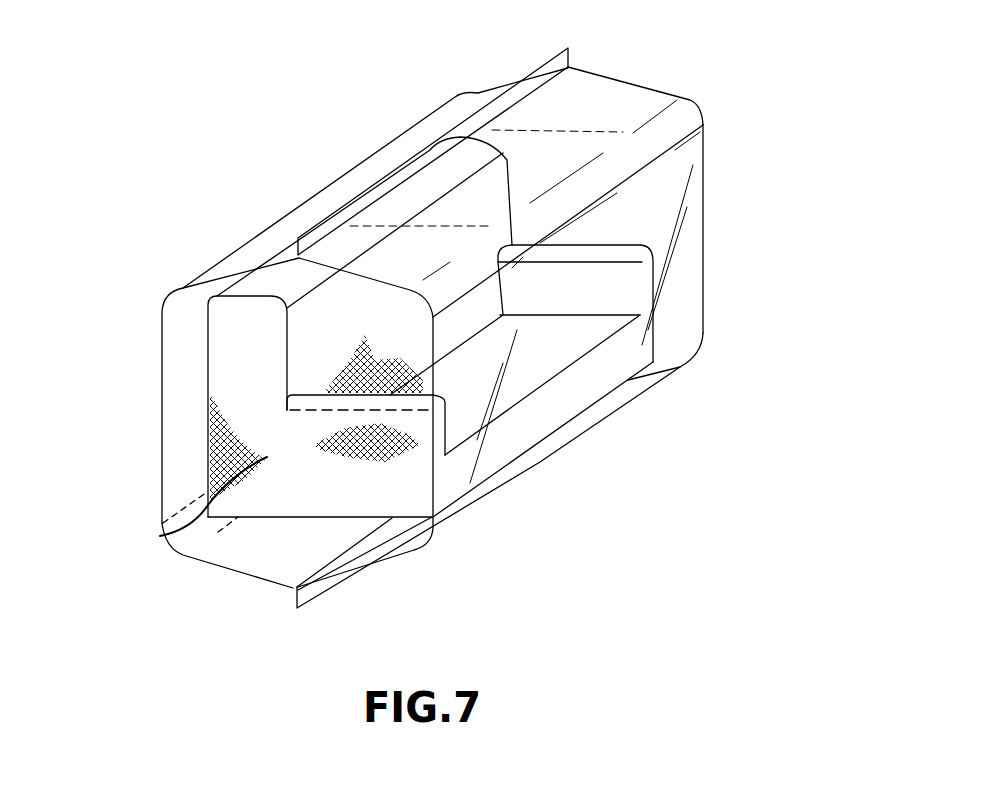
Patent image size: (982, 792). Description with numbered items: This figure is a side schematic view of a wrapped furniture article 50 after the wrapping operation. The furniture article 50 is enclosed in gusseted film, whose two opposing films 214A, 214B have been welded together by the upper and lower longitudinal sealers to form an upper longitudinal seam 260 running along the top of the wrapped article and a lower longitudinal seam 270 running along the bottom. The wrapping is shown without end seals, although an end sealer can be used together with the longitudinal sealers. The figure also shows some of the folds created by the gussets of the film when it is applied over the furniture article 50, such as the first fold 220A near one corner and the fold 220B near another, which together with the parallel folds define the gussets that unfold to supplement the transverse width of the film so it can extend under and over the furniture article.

The furniture article 50 is at (164, 533).
The opposing film 214A is at (545, 415).
The opposing film 214B is at (243, 243).
The first fold 220A is at (650, 137).
The fold 220B is at (637, 398).
The longitudinal seam 260 is at (473, 113).
The longitudinal seam 270 is at (293, 597).